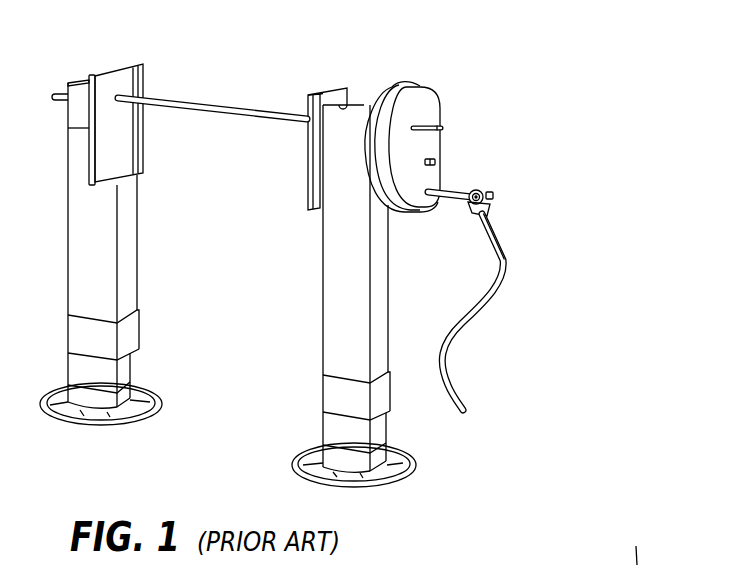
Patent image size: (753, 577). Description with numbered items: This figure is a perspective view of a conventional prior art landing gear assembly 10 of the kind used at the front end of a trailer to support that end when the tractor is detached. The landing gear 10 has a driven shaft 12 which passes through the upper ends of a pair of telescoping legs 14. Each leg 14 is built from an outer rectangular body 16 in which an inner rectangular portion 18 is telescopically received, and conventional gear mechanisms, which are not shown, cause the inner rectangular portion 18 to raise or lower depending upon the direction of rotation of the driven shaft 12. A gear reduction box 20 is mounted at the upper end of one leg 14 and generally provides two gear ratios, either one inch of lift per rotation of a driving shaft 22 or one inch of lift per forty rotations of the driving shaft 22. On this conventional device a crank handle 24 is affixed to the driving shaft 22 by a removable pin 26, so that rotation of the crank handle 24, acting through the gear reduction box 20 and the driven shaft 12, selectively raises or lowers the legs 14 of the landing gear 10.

The landing gear assembly 10 is at (488, 75).
The driven shaft 12 is at (232, 116).
The telescoping legs 14 is at (323, 293).
The outer rectangular body 16 is at (137, 248).
The inner rectangular portion 18 is at (136, 368).
The gear reduction box 20 is at (397, 80).
The driving shaft 22 is at (443, 188).
The crank handle 24 is at (508, 290).
The removable pin 26 is at (470, 212).